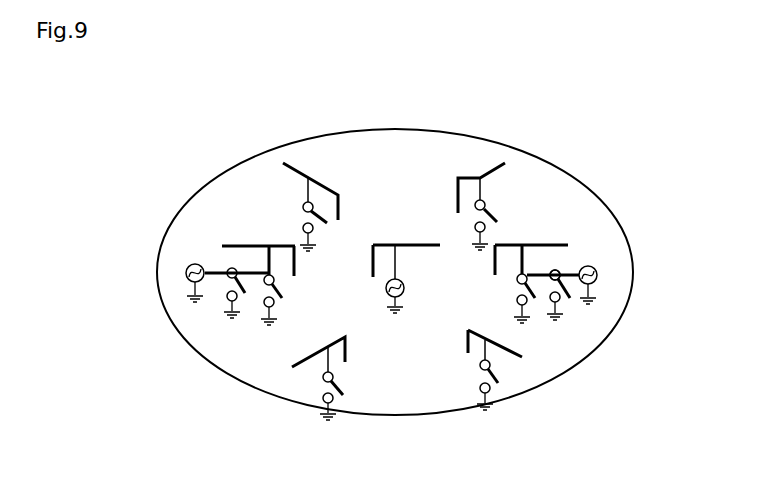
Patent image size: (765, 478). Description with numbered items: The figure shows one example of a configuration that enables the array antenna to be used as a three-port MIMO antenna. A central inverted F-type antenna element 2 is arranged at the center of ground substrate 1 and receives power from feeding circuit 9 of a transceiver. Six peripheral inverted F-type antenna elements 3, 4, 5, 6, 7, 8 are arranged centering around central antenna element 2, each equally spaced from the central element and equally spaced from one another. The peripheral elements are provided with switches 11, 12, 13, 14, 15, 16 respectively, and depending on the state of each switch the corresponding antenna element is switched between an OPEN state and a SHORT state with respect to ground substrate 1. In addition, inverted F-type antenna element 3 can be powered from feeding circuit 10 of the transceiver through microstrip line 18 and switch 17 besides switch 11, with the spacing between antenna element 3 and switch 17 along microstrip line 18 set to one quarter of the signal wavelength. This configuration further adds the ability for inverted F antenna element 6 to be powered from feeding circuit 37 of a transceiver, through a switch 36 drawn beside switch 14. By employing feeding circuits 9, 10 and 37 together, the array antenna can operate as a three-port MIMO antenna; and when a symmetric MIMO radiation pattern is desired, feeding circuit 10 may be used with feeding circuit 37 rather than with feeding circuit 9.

The ground substrate 1 is at (577, 178).
The inverted F-type antenna element 2 is at (394, 243).
The inverted F-type antenna element 3 is at (555, 245).
The inverted F-type antenna element 4 is at (485, 165).
The inverted F-type antenna element 5 is at (300, 170).
The inverted F-type antenna element 6 is at (240, 245).
The inverted F-type antenna element 7 is at (318, 356).
The inverted F-type antenna element 8 is at (510, 357).
The feeding circuit 9 is at (405, 289).
The feeding circuit 10 is at (602, 277).
The switch 11 is at (535, 300).
The switch 12 is at (490, 213).
The switch 13 is at (297, 217).
The switch 14 is at (282, 293).
The switch 15 is at (323, 388).
The switch 16 is at (498, 383).
The switch 17 is at (570, 300).
The microstrip line 18 is at (560, 270).
The switch 36 is at (226, 285).
The feeding circuit 37 is at (185, 273).